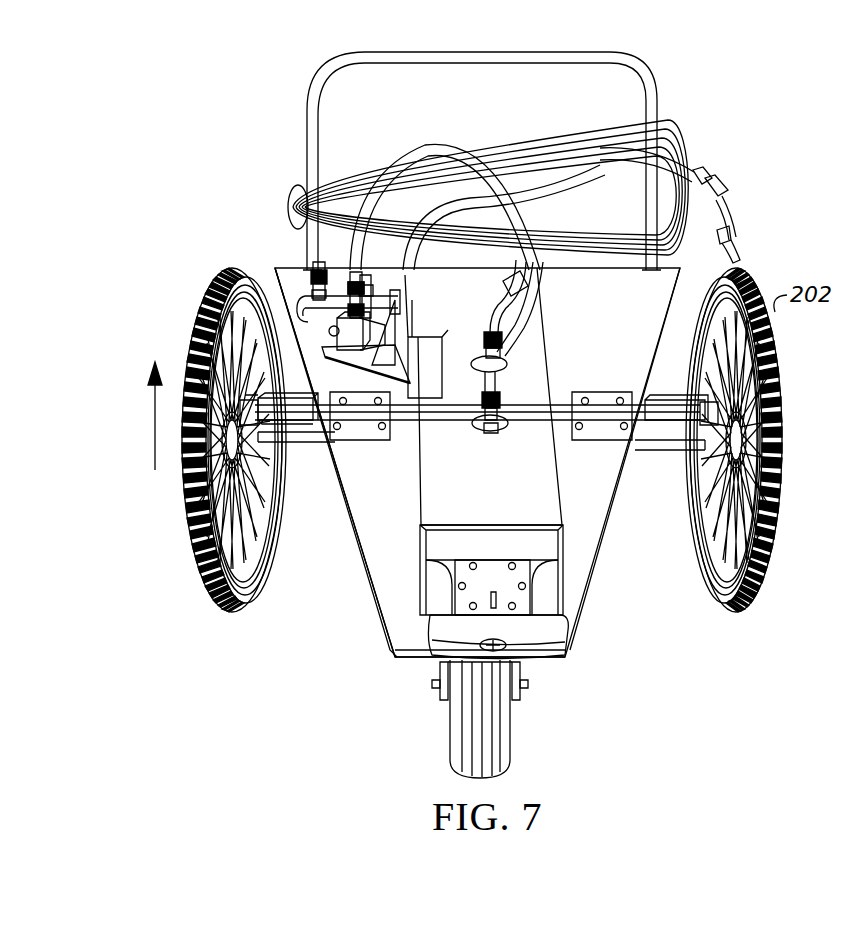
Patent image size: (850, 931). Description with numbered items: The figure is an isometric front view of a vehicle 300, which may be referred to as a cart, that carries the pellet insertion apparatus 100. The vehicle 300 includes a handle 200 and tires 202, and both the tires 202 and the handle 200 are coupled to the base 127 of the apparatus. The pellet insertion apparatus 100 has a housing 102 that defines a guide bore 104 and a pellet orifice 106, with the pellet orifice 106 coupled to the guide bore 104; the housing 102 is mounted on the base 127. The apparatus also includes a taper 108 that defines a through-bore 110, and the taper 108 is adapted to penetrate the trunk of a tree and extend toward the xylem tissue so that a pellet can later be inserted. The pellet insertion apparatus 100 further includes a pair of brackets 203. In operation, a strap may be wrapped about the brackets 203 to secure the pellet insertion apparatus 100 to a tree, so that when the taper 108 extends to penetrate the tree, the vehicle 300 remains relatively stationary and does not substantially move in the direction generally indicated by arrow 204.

The pellet insertion apparatus 100 is at (576, 326).
The housing 102 is at (540, 600).
The guide bore 104 is at (545, 655).
The pellet orifice 106 is at (494, 590).
The taper 108 is at (428, 638).
The through-bore 110 is at (505, 650).
The base 127 is at (383, 580).
The handle 200 is at (318, 98).
The tires 202 is at (195, 340).
The brackets 203 is at (300, 432).
The arrow 204 is at (150, 420).
The vehicle 300 is at (740, 146).